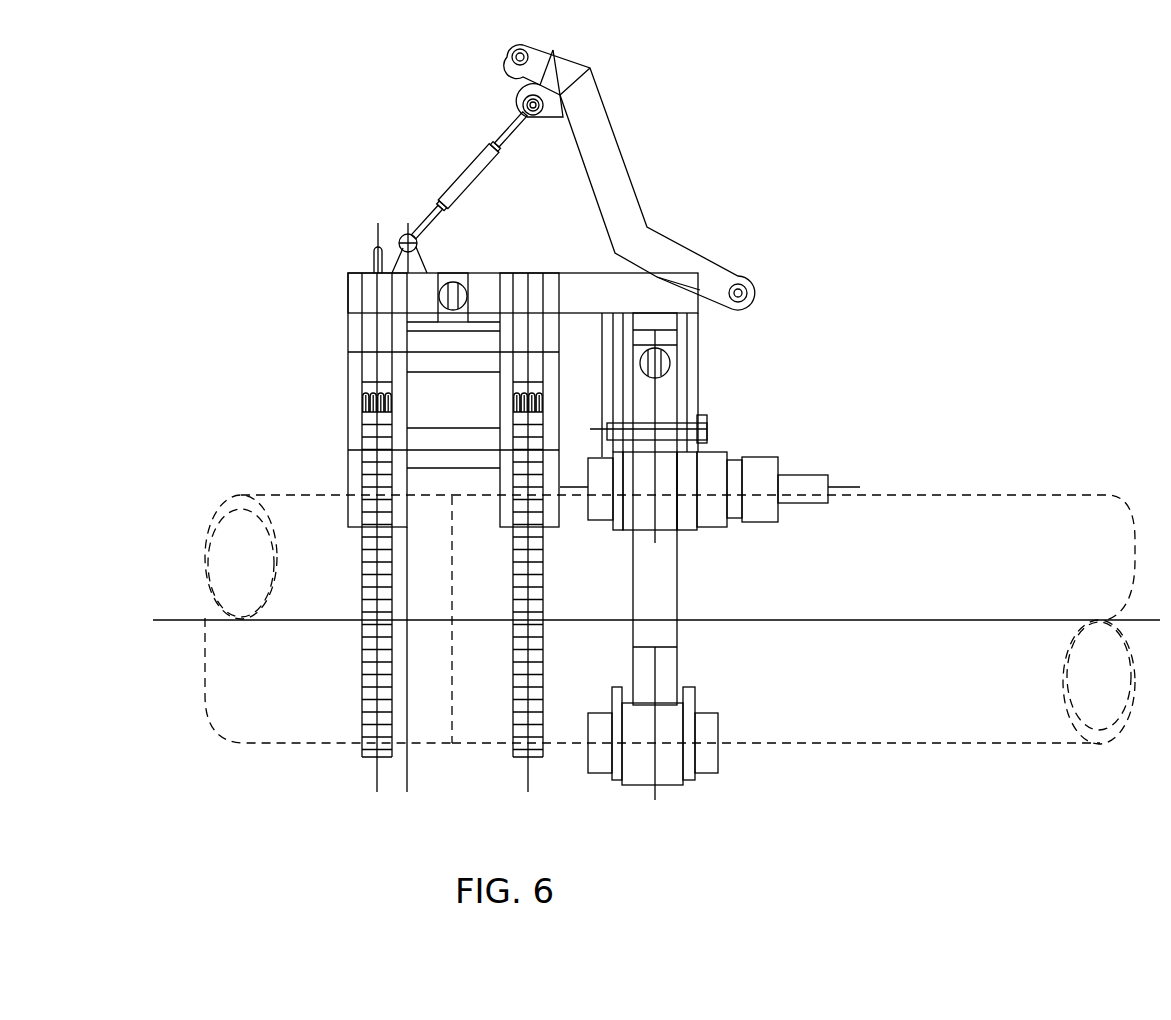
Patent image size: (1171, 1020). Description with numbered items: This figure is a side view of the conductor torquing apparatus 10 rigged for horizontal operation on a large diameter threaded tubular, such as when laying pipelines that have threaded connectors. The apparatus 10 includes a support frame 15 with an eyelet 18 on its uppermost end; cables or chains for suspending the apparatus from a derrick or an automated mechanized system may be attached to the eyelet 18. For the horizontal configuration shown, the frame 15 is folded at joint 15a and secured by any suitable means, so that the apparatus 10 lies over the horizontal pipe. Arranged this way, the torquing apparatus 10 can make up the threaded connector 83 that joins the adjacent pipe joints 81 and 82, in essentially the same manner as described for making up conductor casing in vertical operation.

The conductor torquing apparatus 10 is at (288, 296).
The support frame 15 is at (603, 148).
The joint 15a is at (747, 286).
The eyelet 18 is at (537, 45).
The joint 81 is at (316, 731).
The joint 82 is at (920, 717).
The threaded connector 83 is at (452, 743).